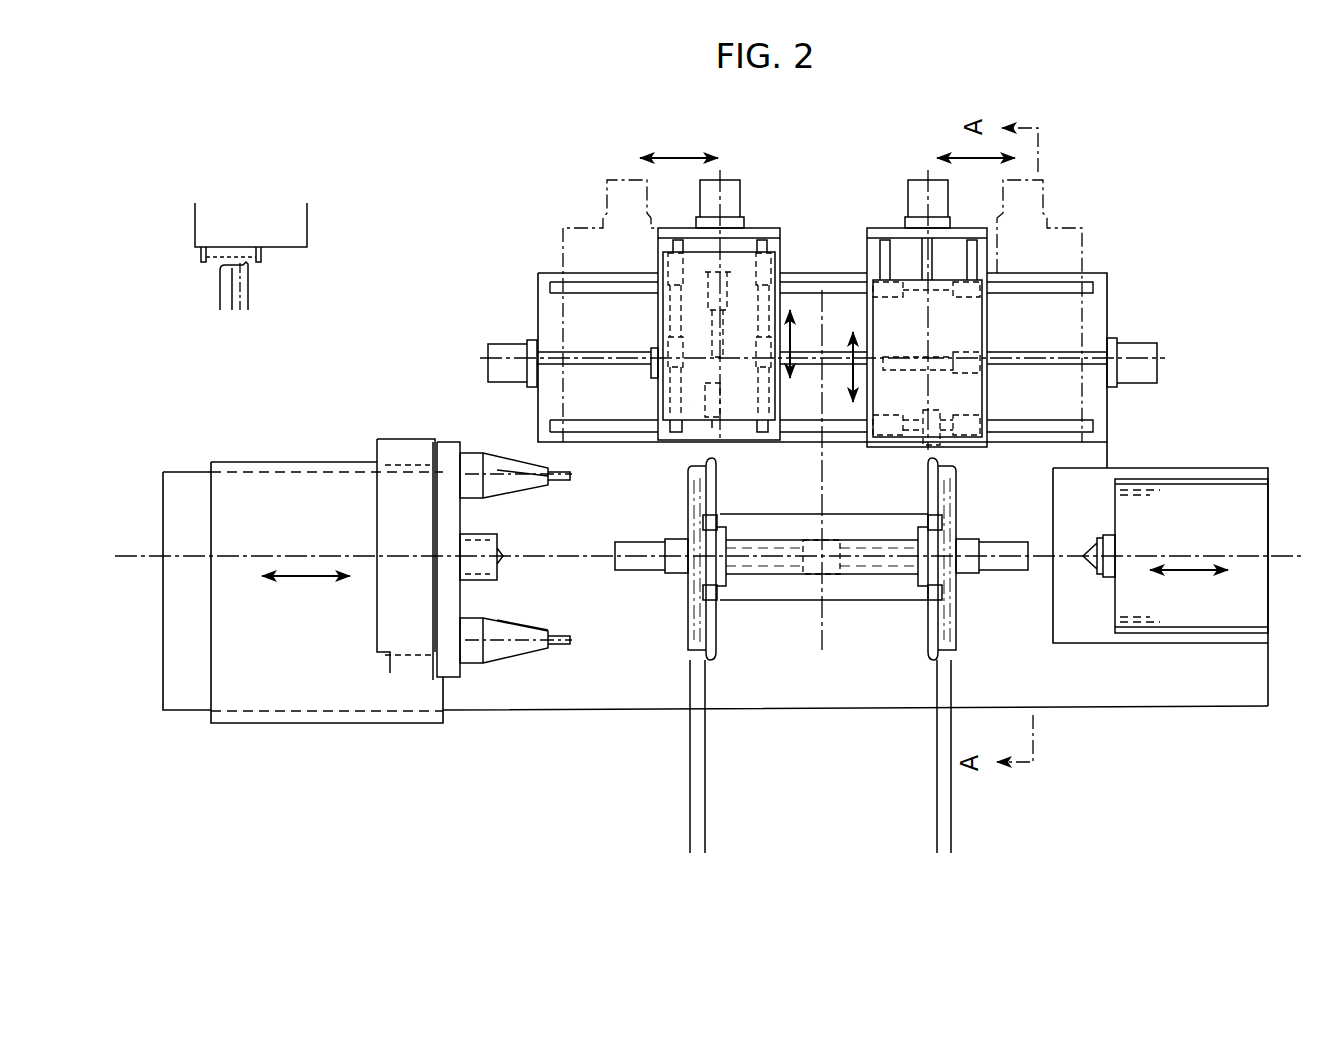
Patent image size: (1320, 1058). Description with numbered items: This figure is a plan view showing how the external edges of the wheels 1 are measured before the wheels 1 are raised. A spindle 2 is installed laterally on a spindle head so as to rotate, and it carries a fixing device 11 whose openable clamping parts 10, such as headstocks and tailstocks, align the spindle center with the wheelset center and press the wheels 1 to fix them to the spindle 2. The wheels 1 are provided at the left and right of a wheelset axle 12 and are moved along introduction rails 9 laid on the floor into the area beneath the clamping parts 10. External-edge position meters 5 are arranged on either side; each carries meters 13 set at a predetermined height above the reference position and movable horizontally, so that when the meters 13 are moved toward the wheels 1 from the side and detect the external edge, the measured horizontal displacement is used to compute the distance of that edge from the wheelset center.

The wheels 1 is at (690, 633).
The spindle 2 is at (357, 728).
The external-edge position meters 5 is at (186, 206).
The introduction rails 9 is at (700, 825).
The clamping parts 10 is at (495, 542).
The fixing device 11 is at (494, 433).
The wheelset axle 12 is at (787, 567).
The meters 13 is at (690, 405).